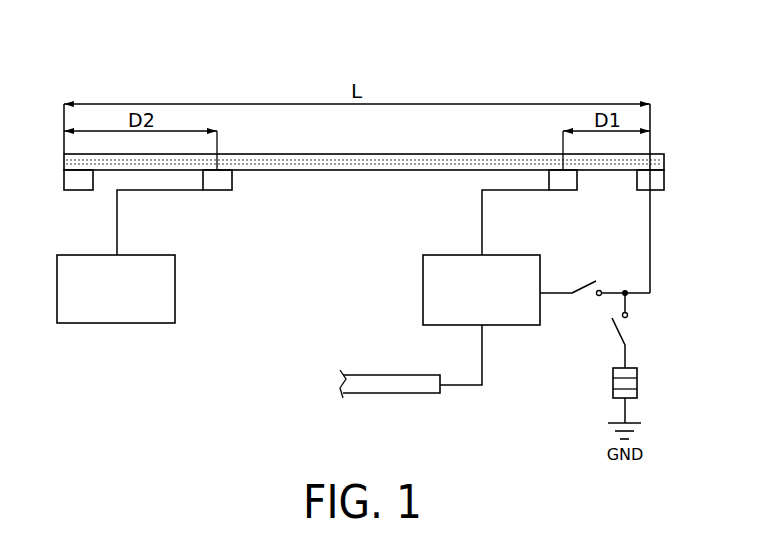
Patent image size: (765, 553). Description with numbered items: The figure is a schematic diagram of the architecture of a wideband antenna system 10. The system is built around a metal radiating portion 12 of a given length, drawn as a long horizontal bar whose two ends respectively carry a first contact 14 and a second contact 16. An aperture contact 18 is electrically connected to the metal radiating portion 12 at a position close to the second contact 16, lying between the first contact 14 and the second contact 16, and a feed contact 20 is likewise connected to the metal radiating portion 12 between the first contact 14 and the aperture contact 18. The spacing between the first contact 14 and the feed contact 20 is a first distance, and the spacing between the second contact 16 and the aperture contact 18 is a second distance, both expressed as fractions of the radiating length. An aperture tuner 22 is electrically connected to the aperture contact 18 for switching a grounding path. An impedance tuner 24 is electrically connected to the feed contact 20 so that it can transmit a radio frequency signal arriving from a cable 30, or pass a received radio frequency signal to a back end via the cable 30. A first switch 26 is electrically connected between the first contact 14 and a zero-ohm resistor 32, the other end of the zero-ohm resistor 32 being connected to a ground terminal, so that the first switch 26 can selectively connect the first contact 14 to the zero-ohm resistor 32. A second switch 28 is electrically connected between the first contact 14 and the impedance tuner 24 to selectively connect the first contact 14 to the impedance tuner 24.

The wideband antenna system 10 is at (48, 66).
The metal radiating portion 12 is at (286, 157).
The first contact 14 is at (633, 183).
The second contact 16 is at (80, 183).
The aperture contact 18 is at (218, 183).
The feed contact 20 is at (565, 183).
The aperture tuner 22 is at (175, 288).
The impedance tuner 24 is at (423, 290).
The first switch 26 is at (620, 333).
The second switch 28 is at (582, 298).
The cable 30 is at (380, 378).
The zero-ohm resistor 32 is at (637, 385).